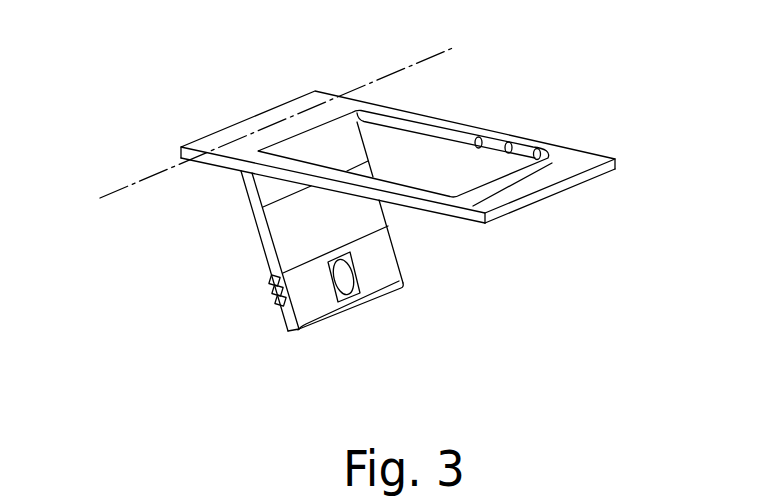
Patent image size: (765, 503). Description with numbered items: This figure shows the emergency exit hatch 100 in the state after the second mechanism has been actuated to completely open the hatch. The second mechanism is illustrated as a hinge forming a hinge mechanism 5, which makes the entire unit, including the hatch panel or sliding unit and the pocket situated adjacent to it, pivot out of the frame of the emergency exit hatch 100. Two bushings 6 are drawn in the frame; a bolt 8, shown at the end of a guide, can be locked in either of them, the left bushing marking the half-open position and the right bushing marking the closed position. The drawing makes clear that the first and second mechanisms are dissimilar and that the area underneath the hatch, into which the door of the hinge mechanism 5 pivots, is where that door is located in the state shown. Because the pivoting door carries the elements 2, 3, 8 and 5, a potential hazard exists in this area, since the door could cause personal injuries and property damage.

The emergency exit hatch 100 is at (327, 195).
The hinge mechanism 5 is at (210, 155).
The bushings 6 is at (480, 137).
The pivoting door element 3 is at (292, 230).
The pivoting door element 2 is at (375, 269).
The bolt 8 is at (280, 304).